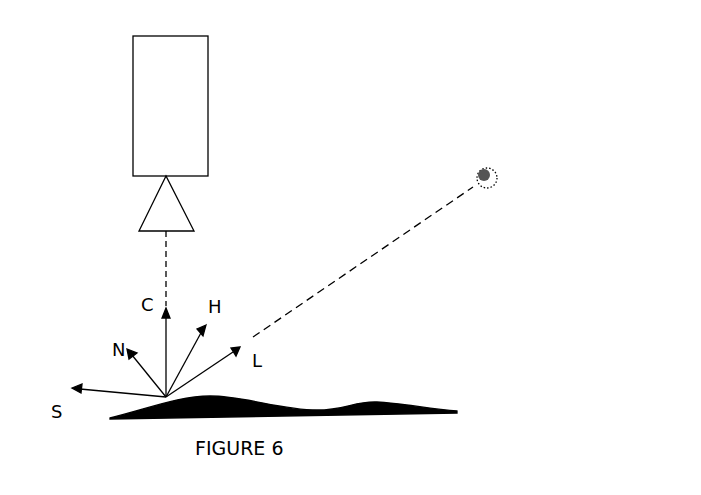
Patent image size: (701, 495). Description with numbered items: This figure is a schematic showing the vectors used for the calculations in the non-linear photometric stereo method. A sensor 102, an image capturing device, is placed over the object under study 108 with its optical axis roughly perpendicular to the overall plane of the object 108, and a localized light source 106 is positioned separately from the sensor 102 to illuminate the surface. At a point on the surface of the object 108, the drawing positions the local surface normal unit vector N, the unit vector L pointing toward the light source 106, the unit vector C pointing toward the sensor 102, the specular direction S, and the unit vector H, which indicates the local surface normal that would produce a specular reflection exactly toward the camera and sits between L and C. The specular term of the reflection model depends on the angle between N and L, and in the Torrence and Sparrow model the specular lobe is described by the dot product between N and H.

The sensor 102 is at (212, 114).
The localized light source 106 is at (503, 162).
The object under study 108 is at (383, 393).